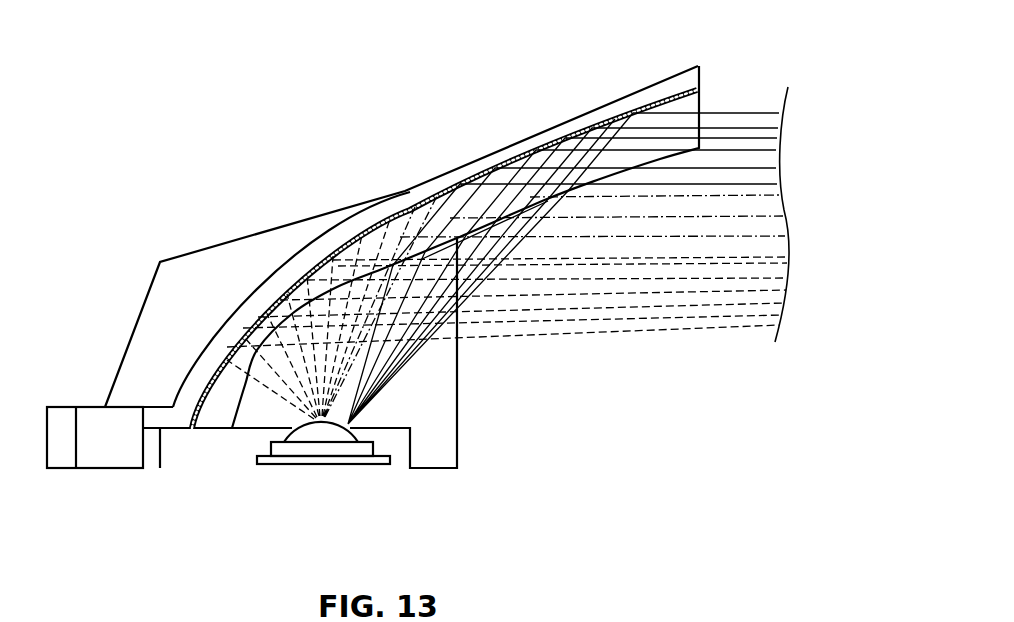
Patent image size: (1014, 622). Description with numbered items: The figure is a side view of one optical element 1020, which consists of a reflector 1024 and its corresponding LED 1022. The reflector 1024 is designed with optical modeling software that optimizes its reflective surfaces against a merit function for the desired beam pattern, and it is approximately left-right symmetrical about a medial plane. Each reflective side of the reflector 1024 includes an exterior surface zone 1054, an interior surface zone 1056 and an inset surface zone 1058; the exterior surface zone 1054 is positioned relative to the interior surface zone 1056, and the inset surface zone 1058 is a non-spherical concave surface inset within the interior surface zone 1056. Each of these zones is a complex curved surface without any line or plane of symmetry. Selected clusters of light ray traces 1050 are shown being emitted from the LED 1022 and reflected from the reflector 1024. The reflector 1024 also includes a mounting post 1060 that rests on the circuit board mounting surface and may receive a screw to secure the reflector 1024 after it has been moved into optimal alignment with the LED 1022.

The optical element 1020 is at (200, 126).
The LED 1022 is at (322, 433).
The reflector 1024 is at (443, 180).
The light ray traces 1050 is at (759, 122).
The exterior surface zone 1054 is at (580, 133).
The interior surface zone 1056 is at (660, 128).
The inset surface zone 1058 is at (300, 288).
The mounting post 1060 is at (107, 460).